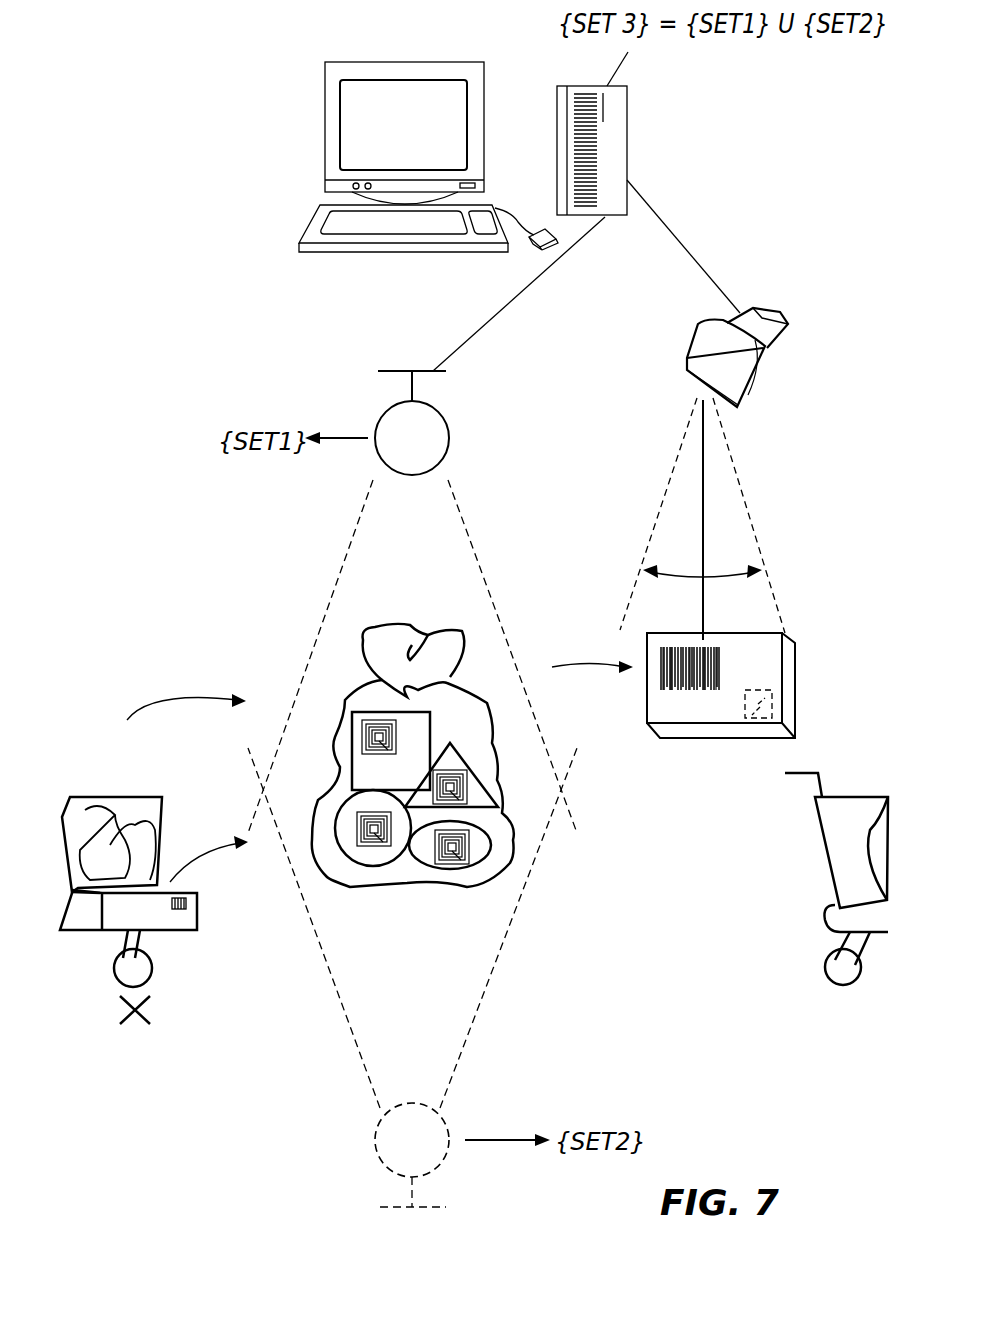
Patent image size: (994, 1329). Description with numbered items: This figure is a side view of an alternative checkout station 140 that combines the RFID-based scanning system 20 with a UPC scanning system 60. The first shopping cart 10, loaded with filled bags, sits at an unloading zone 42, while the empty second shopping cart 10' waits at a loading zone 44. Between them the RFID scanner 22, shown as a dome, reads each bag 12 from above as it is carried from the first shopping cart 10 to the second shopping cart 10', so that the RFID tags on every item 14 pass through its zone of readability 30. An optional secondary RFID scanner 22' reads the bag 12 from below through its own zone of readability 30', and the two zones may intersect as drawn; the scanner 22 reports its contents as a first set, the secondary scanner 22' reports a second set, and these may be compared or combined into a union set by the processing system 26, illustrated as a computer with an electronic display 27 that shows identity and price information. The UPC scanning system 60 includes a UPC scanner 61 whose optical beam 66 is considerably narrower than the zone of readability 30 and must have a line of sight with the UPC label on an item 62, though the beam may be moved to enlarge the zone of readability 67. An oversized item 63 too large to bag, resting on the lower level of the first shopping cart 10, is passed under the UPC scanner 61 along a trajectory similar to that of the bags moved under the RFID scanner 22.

The checkout station 140 is at (148, 96).
The processing system 26 is at (293, 103).
The electronic display 27 is at (418, 62).
The RFID scanner 22 is at (442, 423).
The secondary RFID scanner 22' is at (458, 1140).
The RFID-based scanning system 20 is at (508, 542).
The zone of readability 30 is at (412, 656).
The zone of readability of the secondary scanner 30' is at (423, 928).
The bag 12 is at (478, 694).
The item 14 is at (493, 843).
The UPC scanning system 60 is at (658, 364).
The UPC scanner 61 is at (768, 350).
The optical beam 66 is at (705, 490).
The zone of readability of the UPC scanner 67 is at (735, 432).
The item having a UPC label 62 is at (773, 665).
The oversized item 63 is at (198, 918).
The first shopping cart 10 is at (112, 820).
The second shopping cart 10' is at (836, 843).
The unloading zone 42 is at (172, 996).
The loading zone 44 is at (808, 996).